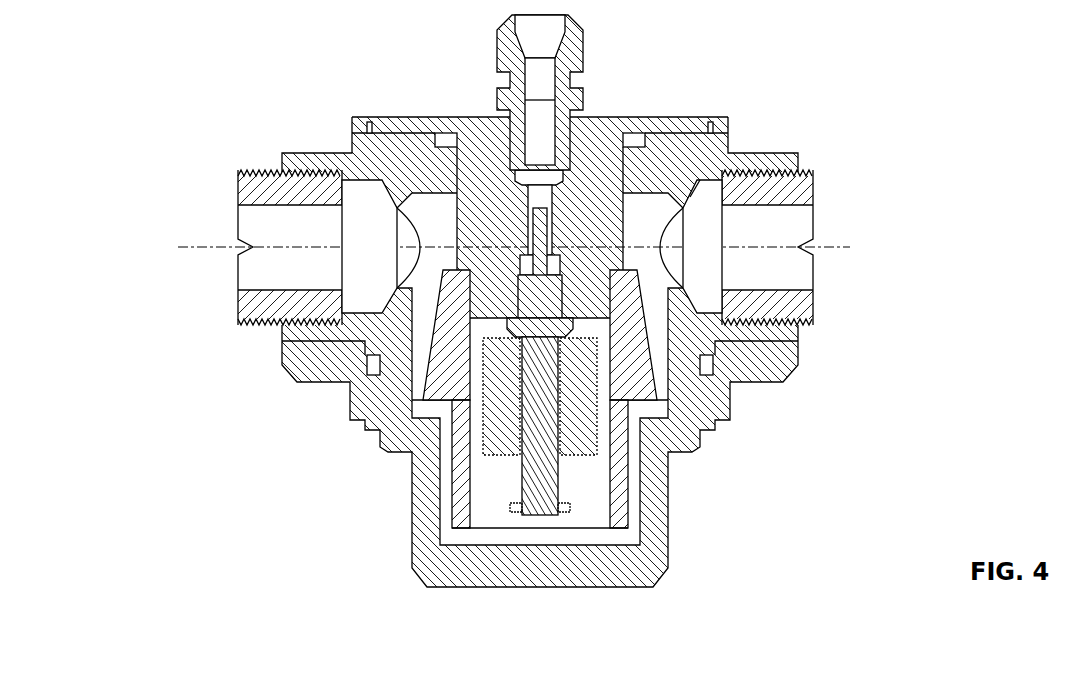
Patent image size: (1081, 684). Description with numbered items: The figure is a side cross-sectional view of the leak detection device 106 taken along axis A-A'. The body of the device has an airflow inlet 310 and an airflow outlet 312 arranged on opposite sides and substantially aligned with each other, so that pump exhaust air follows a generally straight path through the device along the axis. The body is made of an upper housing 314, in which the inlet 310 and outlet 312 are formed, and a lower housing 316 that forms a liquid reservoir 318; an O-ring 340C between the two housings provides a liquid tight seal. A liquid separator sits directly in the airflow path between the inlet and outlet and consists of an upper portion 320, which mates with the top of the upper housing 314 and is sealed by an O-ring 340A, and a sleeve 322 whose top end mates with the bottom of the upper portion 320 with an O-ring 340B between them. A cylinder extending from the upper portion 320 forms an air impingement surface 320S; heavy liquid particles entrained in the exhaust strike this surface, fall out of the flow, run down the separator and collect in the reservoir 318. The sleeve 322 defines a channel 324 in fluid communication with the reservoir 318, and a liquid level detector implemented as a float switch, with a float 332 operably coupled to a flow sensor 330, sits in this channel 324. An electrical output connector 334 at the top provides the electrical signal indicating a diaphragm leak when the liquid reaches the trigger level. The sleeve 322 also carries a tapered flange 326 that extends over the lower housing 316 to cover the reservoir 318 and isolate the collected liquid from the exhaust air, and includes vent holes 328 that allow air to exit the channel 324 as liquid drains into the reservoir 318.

The leak detection device 106 is at (519, 297).
The airflow inlet 310 is at (796, 225).
The airflow outlet 312 is at (255, 226).
The upper housing 314 is at (348, 152).
The lower housing 316 is at (668, 553).
The liquid reservoir 318 is at (611, 536).
The upper portion 320 is at (613, 117).
The air impingement surface 320S is at (690, 197).
The sleeve 322 is at (632, 453).
The channel 324 is at (486, 514).
The tapered flange 326 is at (712, 392).
The vent hole 328 is at (439, 306).
The flow sensor 330 is at (508, 322).
The float 332 is at (582, 388).
The electrical output connector 334 is at (571, 25).
The O-ring 340A is at (447, 117).
The O-ring 340B is at (625, 287).
The O-ring 340C is at (373, 363).